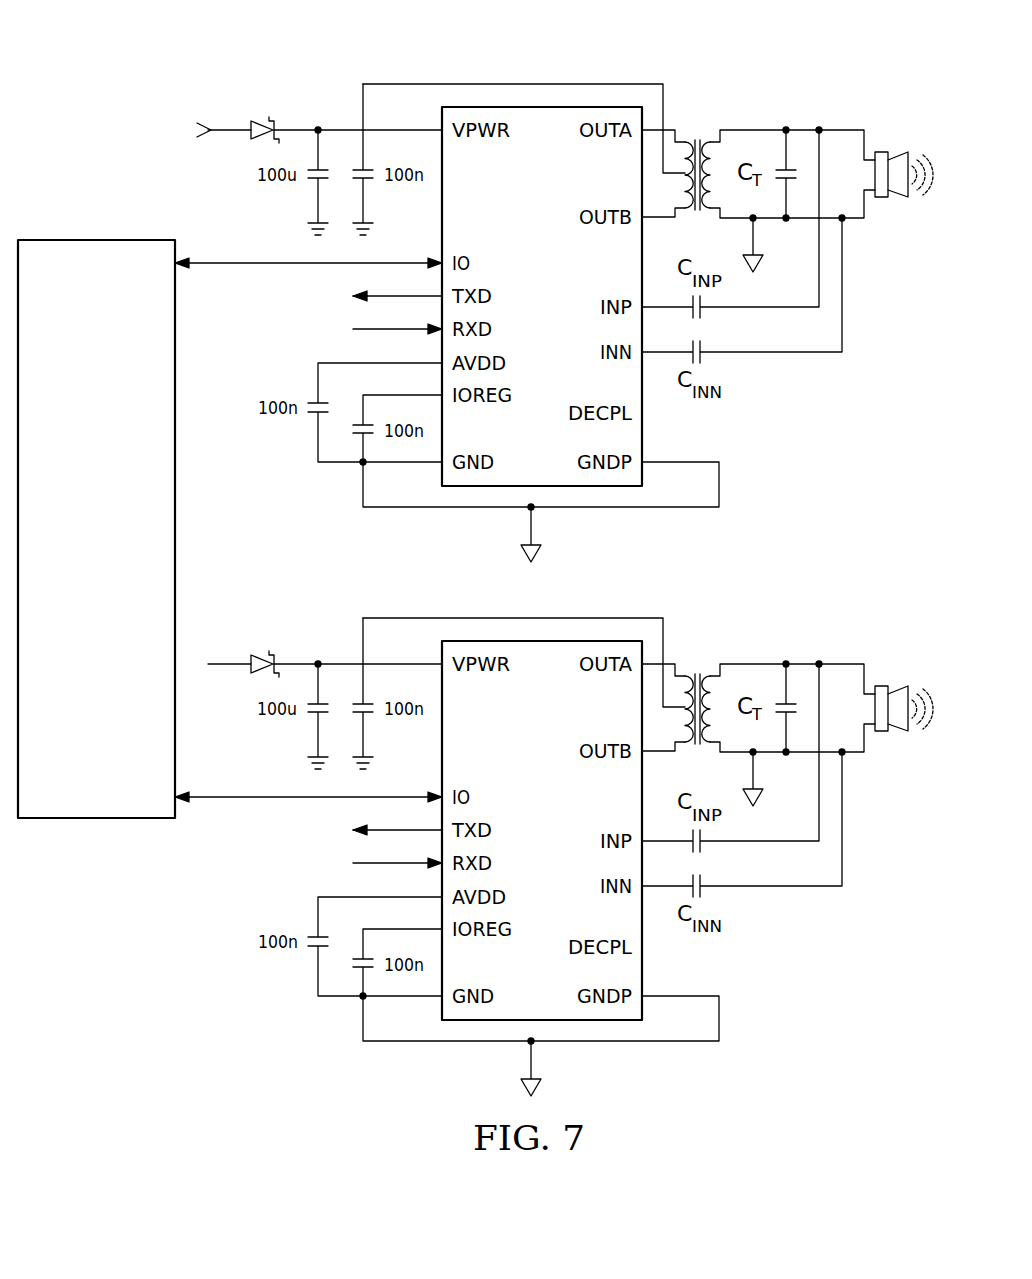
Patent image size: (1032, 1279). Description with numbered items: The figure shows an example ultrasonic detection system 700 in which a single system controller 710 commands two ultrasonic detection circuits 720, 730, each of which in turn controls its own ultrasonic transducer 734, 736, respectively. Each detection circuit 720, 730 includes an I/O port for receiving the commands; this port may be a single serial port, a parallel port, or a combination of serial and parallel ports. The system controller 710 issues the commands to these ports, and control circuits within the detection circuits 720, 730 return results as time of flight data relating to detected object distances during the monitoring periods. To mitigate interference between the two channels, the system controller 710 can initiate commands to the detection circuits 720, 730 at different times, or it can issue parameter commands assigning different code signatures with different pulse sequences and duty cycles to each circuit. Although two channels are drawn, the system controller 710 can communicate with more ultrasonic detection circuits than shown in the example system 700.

The ultrasonic detection system 700 is at (175, 61).
The system controller 710 is at (118, 577).
The ultrasonic detection circuit 720 is at (520, 322).
The ultrasonic detection circuit 730 is at (542, 830).
The ultrasonic transducer 734 is at (877, 151).
The ultrasonic transducer 736 is at (903, 678).